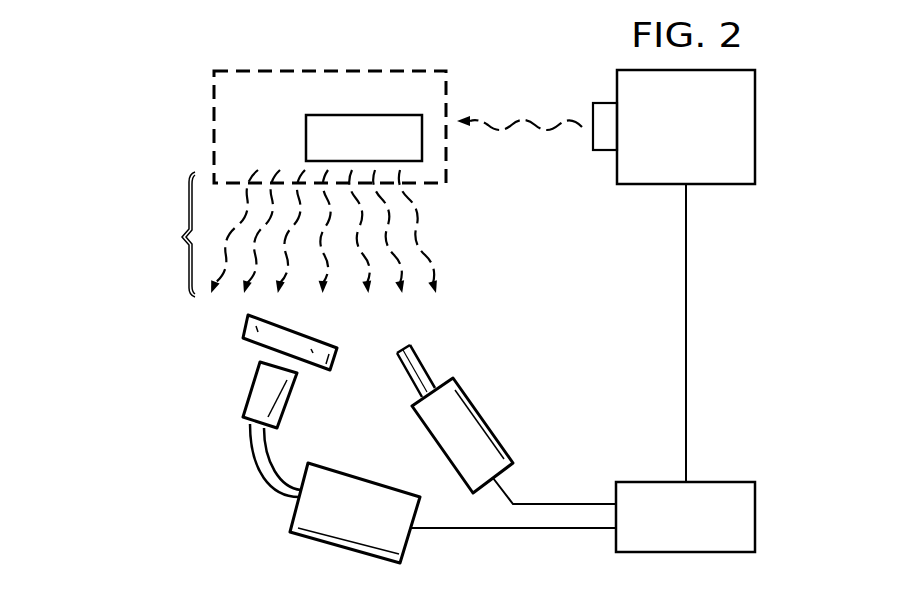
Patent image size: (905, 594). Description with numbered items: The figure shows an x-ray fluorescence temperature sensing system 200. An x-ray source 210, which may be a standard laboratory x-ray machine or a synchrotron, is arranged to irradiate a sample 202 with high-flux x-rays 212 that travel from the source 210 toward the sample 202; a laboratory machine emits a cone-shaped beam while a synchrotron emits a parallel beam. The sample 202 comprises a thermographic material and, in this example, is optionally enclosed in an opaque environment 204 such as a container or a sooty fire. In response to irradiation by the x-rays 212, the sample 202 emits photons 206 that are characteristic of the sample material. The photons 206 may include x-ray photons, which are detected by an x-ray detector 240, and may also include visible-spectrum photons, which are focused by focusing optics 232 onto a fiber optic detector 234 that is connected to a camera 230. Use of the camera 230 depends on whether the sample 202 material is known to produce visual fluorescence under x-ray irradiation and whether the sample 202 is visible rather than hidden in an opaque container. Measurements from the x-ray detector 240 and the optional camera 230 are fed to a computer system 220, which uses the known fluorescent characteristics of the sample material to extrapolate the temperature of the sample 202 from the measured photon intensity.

The x-ray fluorescence temperature sensing system 200 is at (108, 66).
The sample 202 is at (306, 139).
The opaque environment 204 is at (214, 128).
The photons 206 is at (283, 233).
The x-ray source 210 is at (757, 127).
The x-rays 212 is at (526, 121).
The computer system 220 is at (755, 518).
The camera 230 is at (365, 478).
The focusing optics 232 is at (244, 326).
The fiber optic detector 234 is at (253, 387).
The x-ray detector 240 is at (513, 404).